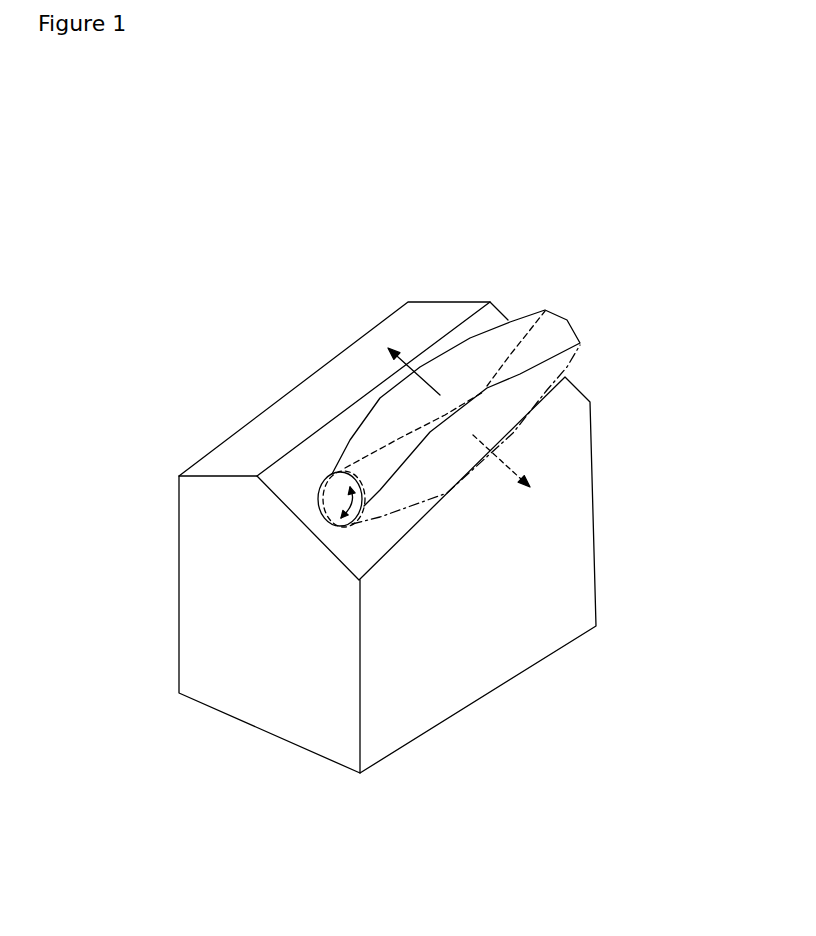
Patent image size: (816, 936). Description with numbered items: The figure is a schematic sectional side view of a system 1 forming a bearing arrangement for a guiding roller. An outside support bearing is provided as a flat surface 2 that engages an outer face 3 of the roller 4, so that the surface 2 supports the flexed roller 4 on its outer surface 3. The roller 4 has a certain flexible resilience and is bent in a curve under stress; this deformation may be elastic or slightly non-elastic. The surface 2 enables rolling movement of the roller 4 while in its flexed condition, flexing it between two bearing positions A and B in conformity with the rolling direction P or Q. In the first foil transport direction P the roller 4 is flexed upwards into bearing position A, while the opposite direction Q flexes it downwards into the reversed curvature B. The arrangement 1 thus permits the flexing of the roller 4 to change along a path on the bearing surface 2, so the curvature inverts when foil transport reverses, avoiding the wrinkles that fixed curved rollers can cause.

The system 1 is at (595, 283).
The flat surface 2 is at (317, 460).
The outer face 3 is at (373, 417).
The roller 4 is at (310, 505).